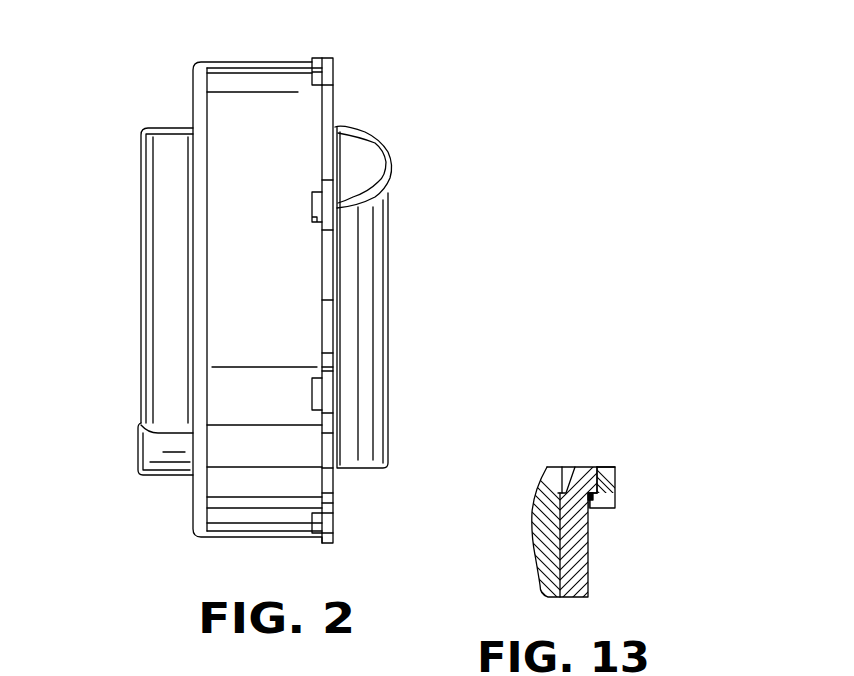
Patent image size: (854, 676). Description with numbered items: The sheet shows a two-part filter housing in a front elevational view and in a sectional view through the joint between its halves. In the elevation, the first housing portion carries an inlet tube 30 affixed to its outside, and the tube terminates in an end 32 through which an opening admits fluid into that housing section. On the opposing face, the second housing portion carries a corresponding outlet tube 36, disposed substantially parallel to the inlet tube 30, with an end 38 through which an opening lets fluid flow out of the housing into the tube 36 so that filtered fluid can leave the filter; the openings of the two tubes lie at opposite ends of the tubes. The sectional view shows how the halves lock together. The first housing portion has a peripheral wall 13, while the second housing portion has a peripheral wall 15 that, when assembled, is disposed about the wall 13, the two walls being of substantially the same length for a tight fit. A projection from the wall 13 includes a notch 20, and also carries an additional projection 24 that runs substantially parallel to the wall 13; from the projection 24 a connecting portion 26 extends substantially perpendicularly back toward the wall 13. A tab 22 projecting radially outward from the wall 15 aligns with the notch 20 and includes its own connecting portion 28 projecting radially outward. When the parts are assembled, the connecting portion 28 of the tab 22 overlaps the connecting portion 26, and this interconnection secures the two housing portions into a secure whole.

In FIG. 2, the peripheral wall 15 is at (241, 62).
In FIG. 13, the peripheral wall 15 is at (590, 568).
In FIG. 2, the end 32 is at (382, 147).
In FIG. 2, the outlet tube 36 is at (140, 268).
In FIG. 2, the inlet tube 30 is at (391, 309).
In FIG. 2, the end 38 is at (158, 474).
In FIG. 13, the peripheral wall 13 is at (542, 575).
In FIG. 13, the notch 20 is at (572, 466).
In FIG. 13, the tab 22 is at (590, 465).
In FIG. 13, the connecting portion 28 is at (595, 467).
In FIG. 13, the projection 24 is at (617, 487).
In FIG. 13, the connecting portion 26 is at (598, 510).